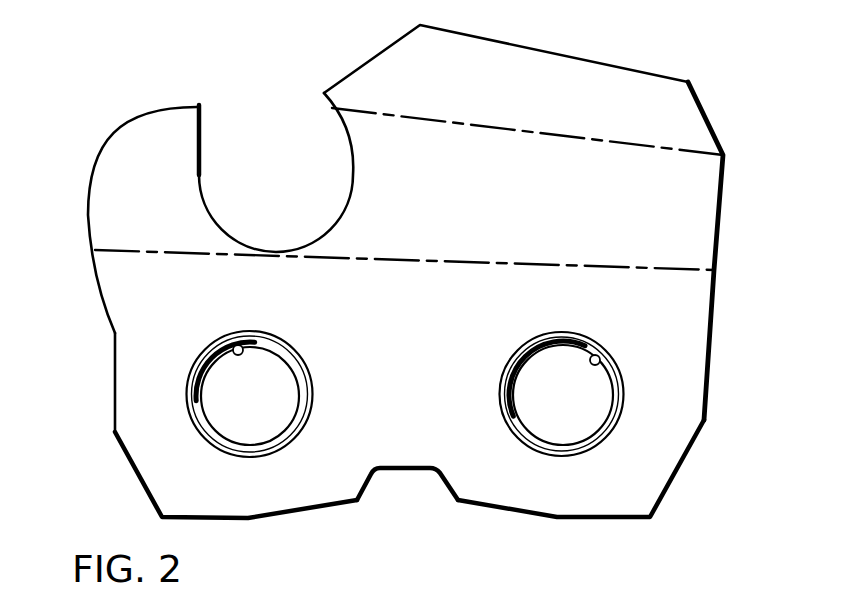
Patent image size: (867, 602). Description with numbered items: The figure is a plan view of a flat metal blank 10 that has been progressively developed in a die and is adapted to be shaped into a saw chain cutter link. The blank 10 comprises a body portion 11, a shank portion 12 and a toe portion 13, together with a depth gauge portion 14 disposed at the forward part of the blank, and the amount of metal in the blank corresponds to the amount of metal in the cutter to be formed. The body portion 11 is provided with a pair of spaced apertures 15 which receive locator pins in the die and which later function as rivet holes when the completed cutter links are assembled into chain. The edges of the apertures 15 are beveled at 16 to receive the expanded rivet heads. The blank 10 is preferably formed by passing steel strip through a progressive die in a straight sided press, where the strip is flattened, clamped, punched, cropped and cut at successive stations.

The blank 10 is at (100, 342).
The body portion 11 is at (410, 440).
The shank portion 12 is at (692, 217).
The toe portion 13 is at (572, 88).
The depth gauge portion 14 is at (157, 138).
The spaced apertures 15 is at (237, 346).
The beveled edges 16 is at (304, 398).